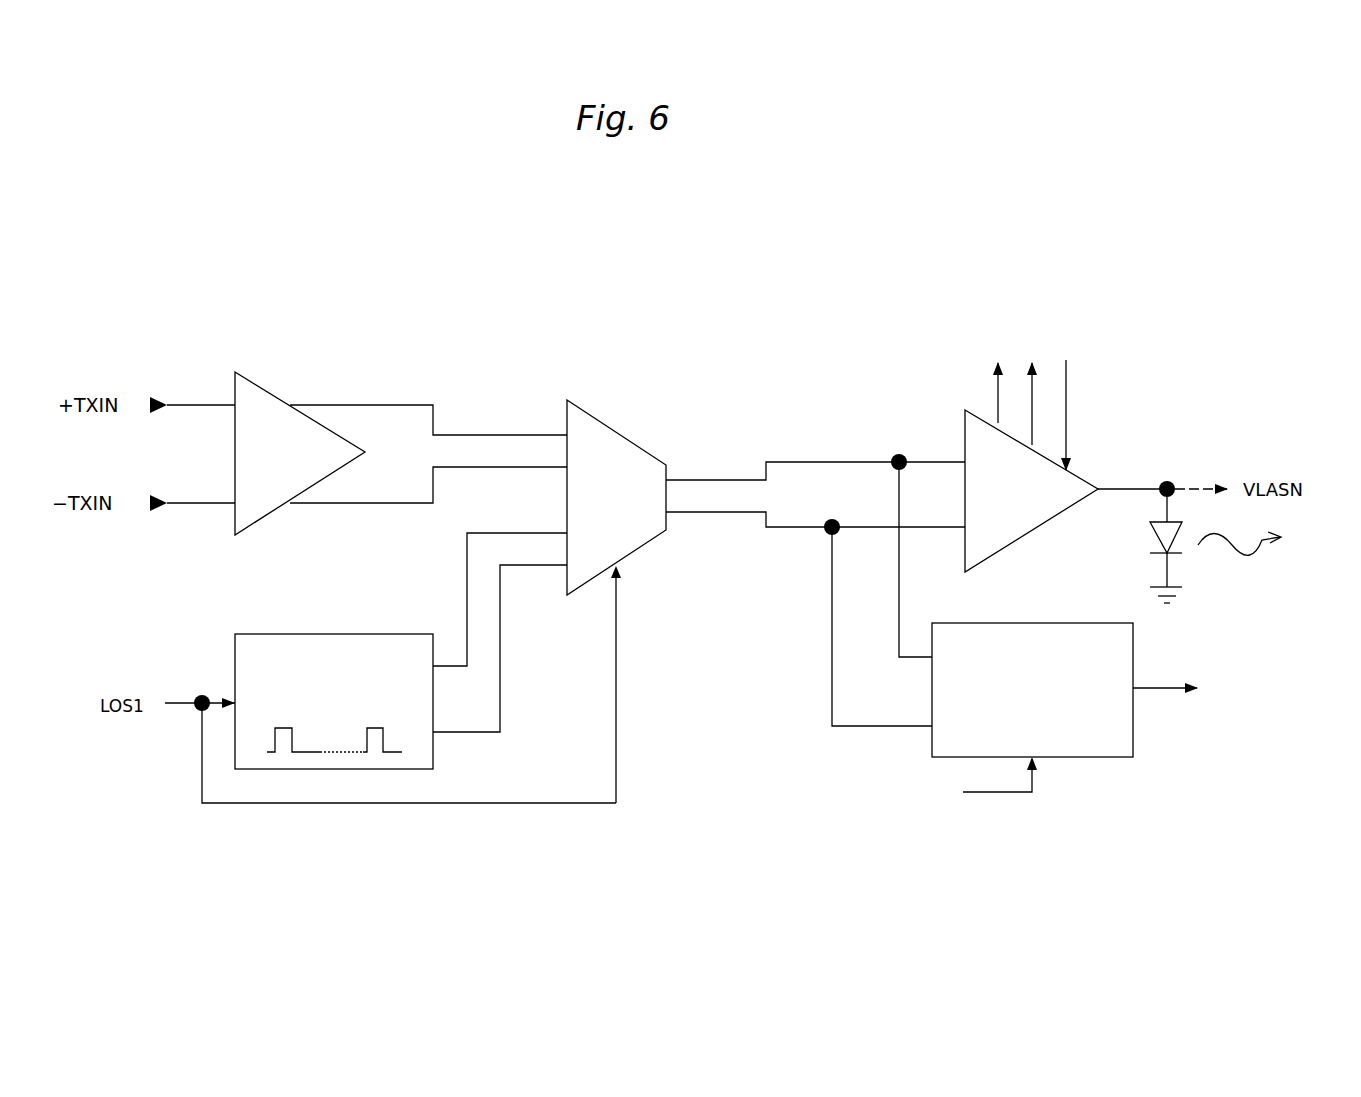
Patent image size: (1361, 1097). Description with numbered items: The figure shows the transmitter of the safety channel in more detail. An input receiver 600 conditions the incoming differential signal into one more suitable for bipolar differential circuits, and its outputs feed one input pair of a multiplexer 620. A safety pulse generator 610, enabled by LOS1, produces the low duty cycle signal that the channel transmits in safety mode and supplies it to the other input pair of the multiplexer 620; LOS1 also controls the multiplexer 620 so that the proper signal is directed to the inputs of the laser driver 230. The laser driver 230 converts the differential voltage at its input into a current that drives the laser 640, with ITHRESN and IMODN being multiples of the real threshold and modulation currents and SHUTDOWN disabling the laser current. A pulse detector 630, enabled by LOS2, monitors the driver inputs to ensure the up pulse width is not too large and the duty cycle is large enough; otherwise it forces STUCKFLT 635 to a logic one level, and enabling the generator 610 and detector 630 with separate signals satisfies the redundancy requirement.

The input receiver 600 is at (260, 382).
The safety pulse generator 610 is at (280, 634).
The multiplexer 620 is at (603, 423).
The laser driver 230 is at (1082, 478).
The laser 640 is at (1173, 560).
The pulse detector 630 is at (982, 632).
The STUCKFLT 635 is at (1215, 670).